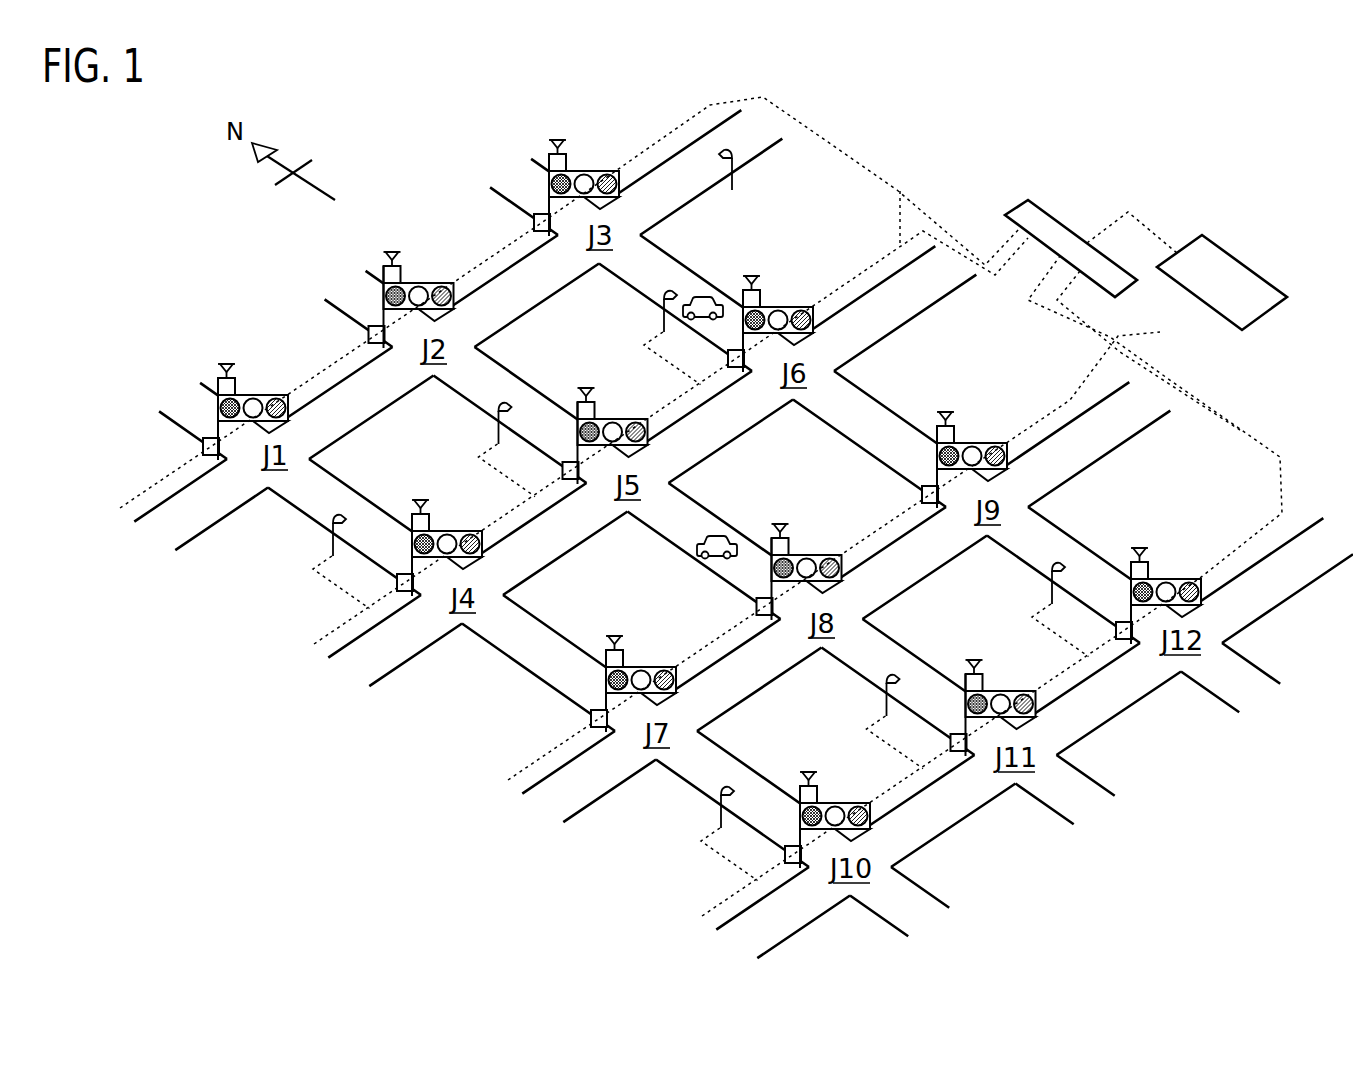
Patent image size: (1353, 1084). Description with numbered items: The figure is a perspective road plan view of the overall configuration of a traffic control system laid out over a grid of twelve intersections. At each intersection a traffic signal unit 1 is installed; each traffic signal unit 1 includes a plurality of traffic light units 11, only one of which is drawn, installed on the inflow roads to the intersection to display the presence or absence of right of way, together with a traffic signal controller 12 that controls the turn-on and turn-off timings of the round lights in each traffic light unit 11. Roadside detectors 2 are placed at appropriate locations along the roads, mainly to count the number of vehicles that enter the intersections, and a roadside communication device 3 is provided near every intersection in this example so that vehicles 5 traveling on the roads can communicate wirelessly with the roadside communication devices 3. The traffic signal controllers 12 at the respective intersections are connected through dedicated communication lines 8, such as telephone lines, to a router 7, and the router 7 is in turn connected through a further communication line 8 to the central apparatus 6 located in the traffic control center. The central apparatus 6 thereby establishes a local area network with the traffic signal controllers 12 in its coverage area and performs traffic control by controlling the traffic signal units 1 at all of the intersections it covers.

The traffic signal unit 1 is at (404, 442).
The roadside detector 2 is at (331, 539).
The roadside communication device 3 is at (616, 638).
The vehicle 5 is at (703, 297).
The central apparatus 6 is at (1234, 256).
The router 7 is at (1053, 214).
The communication line 8 is at (900, 190).
The traffic light unit 11 is at (606, 678).
The traffic signal controller 12 is at (591, 722).